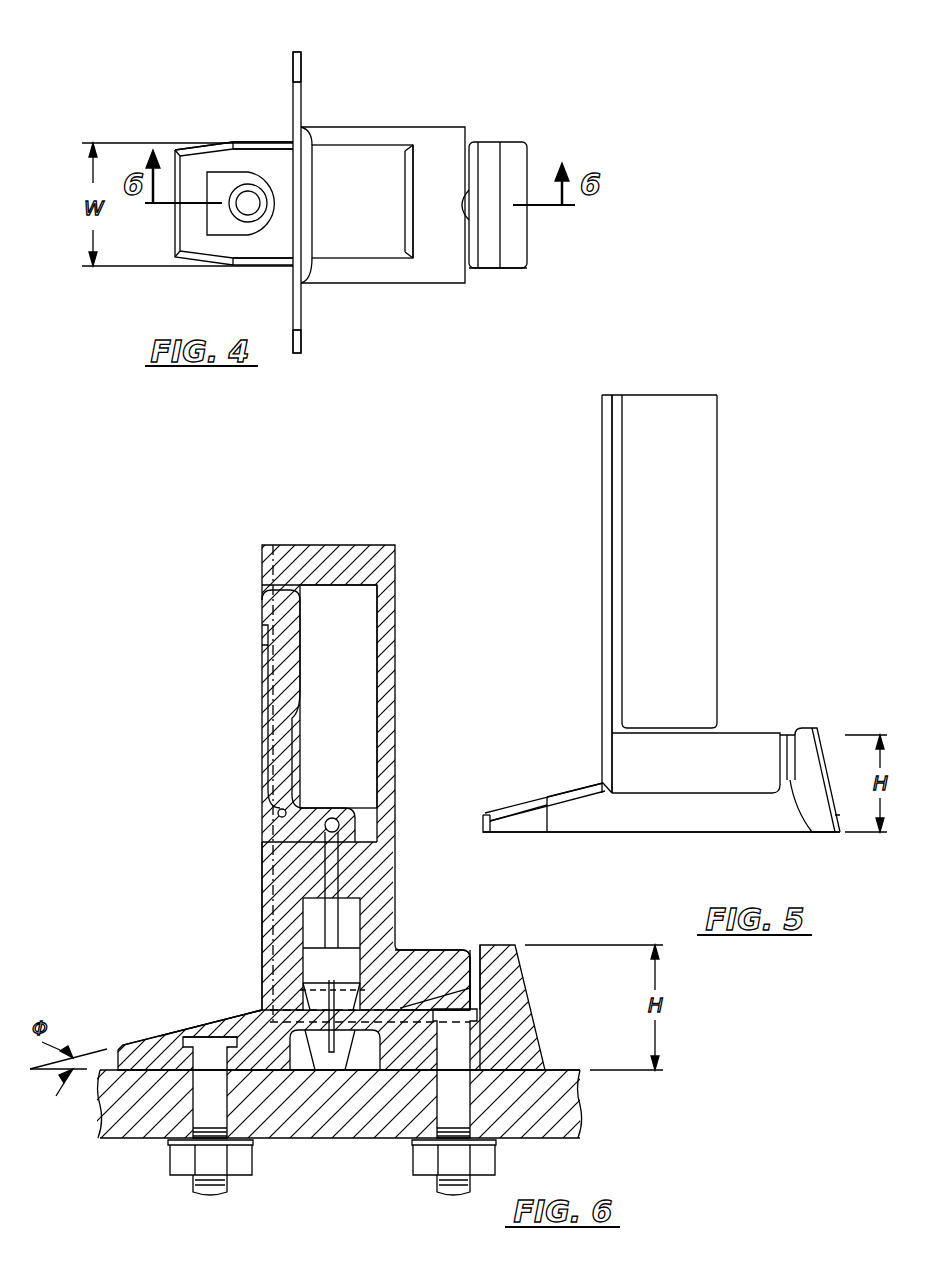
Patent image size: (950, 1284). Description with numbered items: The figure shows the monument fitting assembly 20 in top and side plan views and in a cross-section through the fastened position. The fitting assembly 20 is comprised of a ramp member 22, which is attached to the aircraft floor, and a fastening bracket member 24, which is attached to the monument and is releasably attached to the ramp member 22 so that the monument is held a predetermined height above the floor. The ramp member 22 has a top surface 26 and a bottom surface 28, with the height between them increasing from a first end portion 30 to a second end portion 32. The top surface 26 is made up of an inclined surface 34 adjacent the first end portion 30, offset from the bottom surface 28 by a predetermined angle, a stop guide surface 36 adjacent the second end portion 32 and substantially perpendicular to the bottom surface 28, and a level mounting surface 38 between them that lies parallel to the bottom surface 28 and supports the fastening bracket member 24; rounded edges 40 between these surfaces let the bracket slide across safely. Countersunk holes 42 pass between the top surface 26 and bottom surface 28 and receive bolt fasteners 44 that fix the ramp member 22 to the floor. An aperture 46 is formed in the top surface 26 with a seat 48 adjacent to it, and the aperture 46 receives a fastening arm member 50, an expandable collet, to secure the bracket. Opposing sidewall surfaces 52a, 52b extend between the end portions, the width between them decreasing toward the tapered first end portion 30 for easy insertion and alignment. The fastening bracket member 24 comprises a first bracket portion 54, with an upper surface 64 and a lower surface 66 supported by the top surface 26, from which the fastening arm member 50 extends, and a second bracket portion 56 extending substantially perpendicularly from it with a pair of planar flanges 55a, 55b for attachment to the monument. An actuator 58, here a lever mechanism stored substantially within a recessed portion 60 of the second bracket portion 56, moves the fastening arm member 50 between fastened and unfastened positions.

In FIG. 4, the fitting assembly 20 is at (103, 118).
In FIG. 6, the fitting assembly 20 is at (133, 1140).
In FIG. 4, the ramp member 22 is at (526, 275).
In FIG. 5, the ramp member 22 is at (815, 728).
In FIG. 6, the ramp member 22 is at (523, 943).
In FIG. 4, the fastening bracket member 24 is at (290, 53).
In FIG. 5, the fastening bracket member 24 is at (605, 385).
In FIG. 6, the fastening bracket member 24 is at (396, 543).
In FIG. 4, the top surface 26 is at (225, 150).
In FIG. 5, the top surface 26 is at (580, 785).
In FIG. 6, the top surface 26 is at (263, 965).
In FIG. 5, the bottom surface 28 is at (575, 832).
In FIG. 6, the bottom surface 28 is at (143, 1073).
In FIG. 4, the first end portion 30 is at (170, 148).
In FIG. 5, the first end portion 30 is at (483, 820).
In FIG. 6, the first end portion 30 is at (118, 1048).
In FIG. 4, the second end portion 32 is at (527, 142).
In FIG. 5, the second end portion 32 is at (838, 790).
In FIG. 6, the second end portion 32 is at (545, 1052).
In FIG. 4, the inclined surface 34 is at (258, 155).
In FIG. 5, the inclined surface 34 is at (555, 798).
In FIG. 6, the inclined surface 34 is at (190, 1035).
In FIG. 5, the stop guide surface 36 is at (787, 745).
In FIG. 6, the stop guide surface 36 is at (472, 985).
In FIG. 6, the level mounting surface 38 is at (430, 990).
In FIG. 4, the rounded edges 40 is at (248, 142).
In FIG. 5, the rounded edges 40 is at (793, 735).
In FIG. 4, the countersunk holes 42 is at (245, 212).
In FIG. 6, the countersunk holes 42 is at (466, 988).
In FIG. 6, the bolt fasteners 44 is at (188, 1040).
In FIG. 6, the aperture 46 is at (390, 1056).
In FIG. 6, the seat 48 is at (290, 1062).
In FIG. 6, the fastening arm member 50 is at (360, 1050).
In FIG. 4, the sidewall surface 52a is at (285, 138).
In FIG. 4, the sidewall surface 52b is at (263, 268).
In FIG. 4, the first bracket portion 54 is at (448, 211).
In FIG. 6, the first bracket portion 54 is at (397, 950).
In FIG. 4, the planar flange 55a is at (301, 66).
In FIG. 6, the planar flange 55a is at (288, 563).
In FIG. 4, the planar flange 55b is at (301, 338).
In FIG. 5, the planar flange 55b is at (625, 435).
In FIG. 4, the second bracket portion 56 is at (360, 211).
In FIG. 5, the second bracket portion 56 is at (680, 581).
In FIG. 6, the second bracket portion 56 is at (395, 661).
In FIG. 6, the actuator 58 is at (260, 617).
In FIG. 6, the recessed portion 60 is at (349, 691).
In FIG. 4, the upper surface 64 is at (430, 127).
In FIG. 5, the upper surface 64 is at (735, 733).
In FIG. 6, the upper surface 64 is at (440, 951).
In FIG. 6, the lower surface 66 is at (330, 1055).